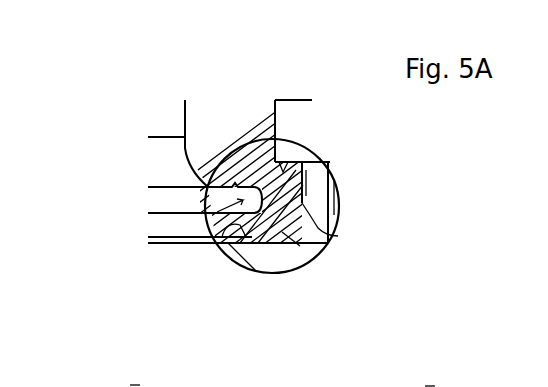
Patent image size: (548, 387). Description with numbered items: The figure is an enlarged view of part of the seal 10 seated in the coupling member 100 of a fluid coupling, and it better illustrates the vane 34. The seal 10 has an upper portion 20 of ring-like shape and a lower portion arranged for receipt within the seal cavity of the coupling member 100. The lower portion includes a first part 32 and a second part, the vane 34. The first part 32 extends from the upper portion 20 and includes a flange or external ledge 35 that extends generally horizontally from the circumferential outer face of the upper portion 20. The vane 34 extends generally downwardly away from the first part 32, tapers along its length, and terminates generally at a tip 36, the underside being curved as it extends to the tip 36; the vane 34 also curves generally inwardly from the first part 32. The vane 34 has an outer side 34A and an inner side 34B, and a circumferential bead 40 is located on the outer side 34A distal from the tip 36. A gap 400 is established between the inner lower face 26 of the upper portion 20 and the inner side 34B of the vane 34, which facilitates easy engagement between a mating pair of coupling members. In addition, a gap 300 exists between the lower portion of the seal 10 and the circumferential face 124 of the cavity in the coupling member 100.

The upper portion 20 is at (228, 117).
The inner lower face 26 is at (203, 186).
The gap 400 is at (205, 221).
The tip 36 is at (248, 238).
The first part 32 is at (328, 161).
The external ledge 35 is at (287, 160).
The gap 300 is at (316, 187).
The circumferential face 124 is at (340, 197).
The outer side 34A is at (330, 228).
The vane 34 is at (265, 225).
The inner side 34B is at (215, 240).
The circumferential bead 40 is at (297, 230).
The seal 10 is at (137, 386).
The coupling member 100 is at (430, 385).